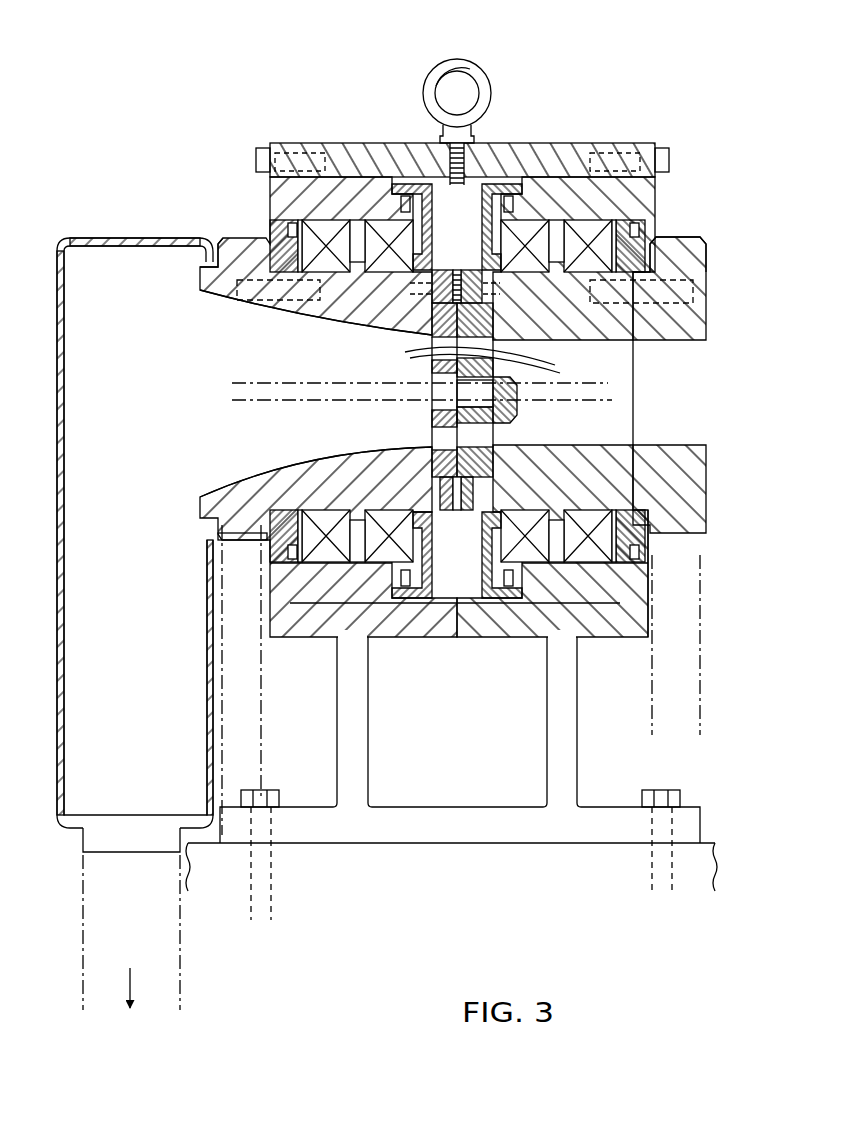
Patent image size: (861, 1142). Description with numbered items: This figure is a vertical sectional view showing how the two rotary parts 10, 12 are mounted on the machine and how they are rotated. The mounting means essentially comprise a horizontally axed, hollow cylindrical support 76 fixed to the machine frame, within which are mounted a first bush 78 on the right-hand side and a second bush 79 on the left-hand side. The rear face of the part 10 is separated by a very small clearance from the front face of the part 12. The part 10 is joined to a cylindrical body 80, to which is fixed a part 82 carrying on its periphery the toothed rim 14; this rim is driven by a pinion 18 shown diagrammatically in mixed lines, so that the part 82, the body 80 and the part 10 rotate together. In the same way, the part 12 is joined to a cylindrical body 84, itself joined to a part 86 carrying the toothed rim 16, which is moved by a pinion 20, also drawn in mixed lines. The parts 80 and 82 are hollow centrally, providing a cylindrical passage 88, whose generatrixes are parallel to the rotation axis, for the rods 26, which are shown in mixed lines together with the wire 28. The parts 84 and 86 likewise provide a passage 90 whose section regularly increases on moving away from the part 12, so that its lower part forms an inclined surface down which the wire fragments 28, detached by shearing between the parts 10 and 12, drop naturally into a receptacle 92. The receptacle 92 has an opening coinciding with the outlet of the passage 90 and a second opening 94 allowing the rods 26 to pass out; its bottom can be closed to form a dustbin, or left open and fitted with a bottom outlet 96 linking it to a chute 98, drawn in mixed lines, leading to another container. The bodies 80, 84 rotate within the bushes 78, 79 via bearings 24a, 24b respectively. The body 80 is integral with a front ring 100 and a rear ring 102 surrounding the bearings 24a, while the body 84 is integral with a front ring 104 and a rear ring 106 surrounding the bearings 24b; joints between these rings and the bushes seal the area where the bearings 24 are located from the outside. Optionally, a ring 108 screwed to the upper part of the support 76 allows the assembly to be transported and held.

The rotary part 10 is at (540, 423).
The rotary part 12 is at (440, 417).
The toothed rim 14 is at (687, 237).
The toothed rim 16 is at (250, 266).
The pinion 18 is at (652, 705).
The pinion 20 is at (222, 697).
The bearings 24 is at (313, 213).
The bearings 24a is at (577, 222).
The bearings 24b is at (340, 225).
The rods 26 is at (240, 400).
The wire 28 is at (410, 350).
The hollow cylindrical support 76 is at (453, 620).
The first bush 78 is at (633, 617).
The second bush 79 is at (340, 583).
The cylindrical body 80 is at (607, 457).
The part carrying the toothed rim 82 is at (677, 508).
The cylindrical body 84 is at (322, 320).
The part carrying the toothed rim 86 is at (200, 268).
The passage 88 is at (689, 373).
The passage 90 is at (290, 455).
The receptacle 92 is at (58, 834).
The second opening 94 is at (60, 272).
The outlet pipe 96 is at (143, 840).
The chute 98 is at (182, 958).
The front ring 100 is at (620, 228).
The rear ring 102 is at (490, 185).
The front ring 104 is at (392, 225).
The rear ring 106 is at (263, 548).
The ring 108 is at (449, 60).